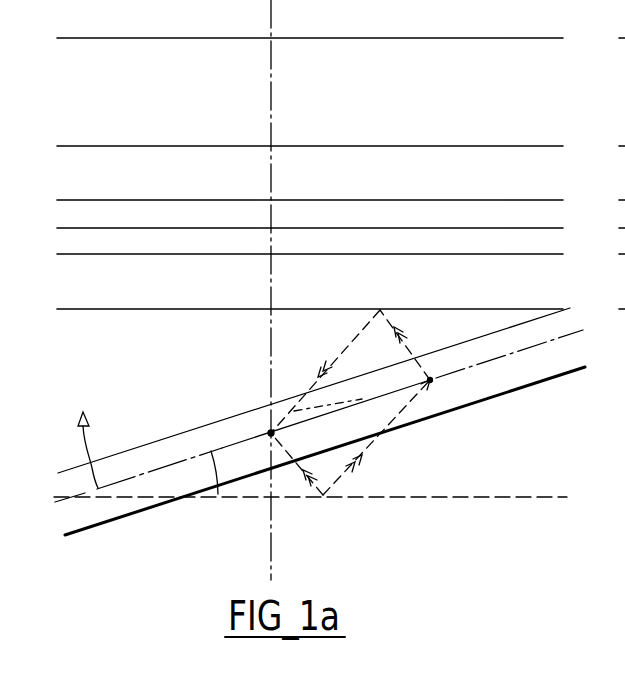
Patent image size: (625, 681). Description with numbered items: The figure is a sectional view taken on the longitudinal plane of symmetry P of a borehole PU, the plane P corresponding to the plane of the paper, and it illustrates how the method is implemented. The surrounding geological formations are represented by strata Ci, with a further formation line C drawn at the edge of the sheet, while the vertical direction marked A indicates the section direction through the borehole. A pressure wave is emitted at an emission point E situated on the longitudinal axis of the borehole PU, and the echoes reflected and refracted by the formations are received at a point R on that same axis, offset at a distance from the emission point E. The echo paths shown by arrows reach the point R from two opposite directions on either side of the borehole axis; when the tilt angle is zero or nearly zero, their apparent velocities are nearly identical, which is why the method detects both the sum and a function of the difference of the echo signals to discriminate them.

The strata Ci is at (192, 175).
The image plane C is at (618, 157).
The optical axis / section direction A is at (271, 13).
The longitudinal plane of symmetry P is at (310, 521).
The borehole PU is at (558, 363).
The point of the borehole R is at (269, 438).
The pressure wave emission point E is at (432, 384).